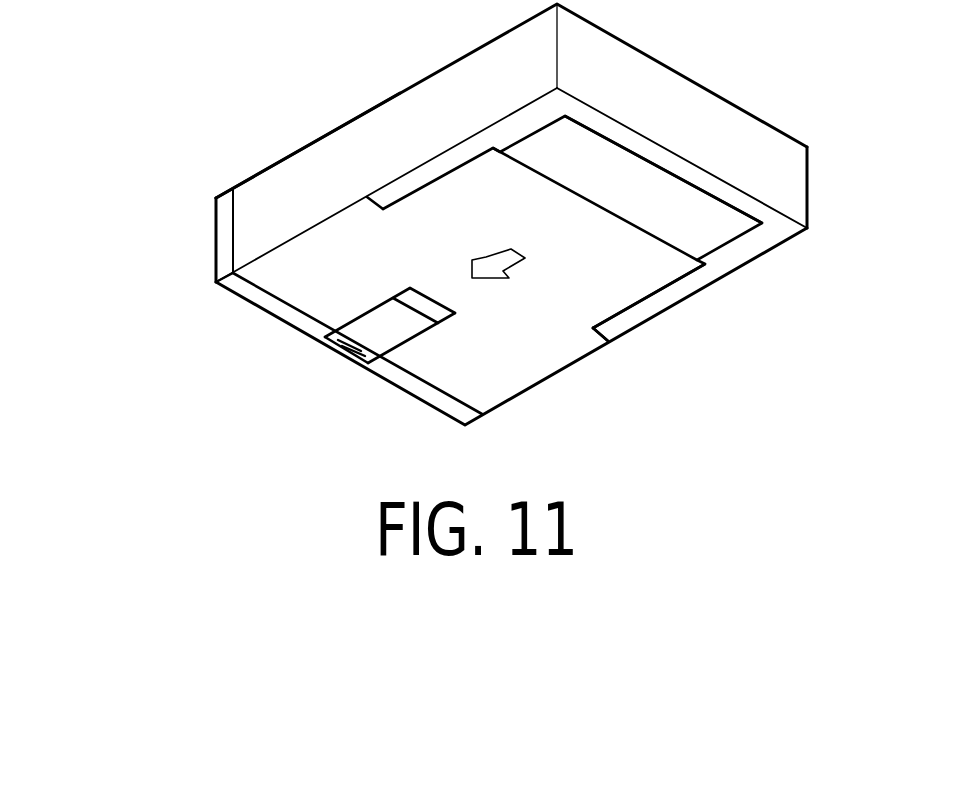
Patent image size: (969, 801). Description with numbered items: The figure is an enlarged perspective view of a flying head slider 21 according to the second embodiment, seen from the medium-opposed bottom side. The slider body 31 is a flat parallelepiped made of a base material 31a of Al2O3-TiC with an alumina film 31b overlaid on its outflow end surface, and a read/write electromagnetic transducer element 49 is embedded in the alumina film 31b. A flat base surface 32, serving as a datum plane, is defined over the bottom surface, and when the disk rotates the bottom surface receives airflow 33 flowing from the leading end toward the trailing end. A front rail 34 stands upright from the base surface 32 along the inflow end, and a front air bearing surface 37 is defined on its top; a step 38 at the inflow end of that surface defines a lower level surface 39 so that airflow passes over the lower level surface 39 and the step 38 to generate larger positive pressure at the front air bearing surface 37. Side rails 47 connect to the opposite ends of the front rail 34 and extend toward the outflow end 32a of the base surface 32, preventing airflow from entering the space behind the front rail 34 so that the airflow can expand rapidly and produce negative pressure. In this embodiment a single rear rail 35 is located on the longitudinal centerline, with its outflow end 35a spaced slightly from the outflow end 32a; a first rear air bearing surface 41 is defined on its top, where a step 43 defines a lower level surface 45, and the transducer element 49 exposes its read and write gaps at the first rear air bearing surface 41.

The flying head slider 21 is at (367, 106).
The slider body 31 is at (108, 127).
The base material 31a is at (260, 170).
The alumina film 31b is at (222, 196).
The base surface 32 is at (623, 279).
The outflow end of the base surface 32a is at (270, 306).
The airflow 33 is at (500, 252).
The front rail 34 is at (520, 165).
The rear rail 35 is at (387, 320).
The outflow end of the rear rail 35a is at (362, 367).
The front air bearing surface 37 is at (634, 206).
The step 38 is at (675, 170).
The lower level surface 39 is at (750, 252).
The first rear air bearing surface 41 is at (408, 344).
The step 43 is at (437, 321).
The lower level surface 45 is at (423, 296).
The side rail 47 is at (385, 187).
The read/write electromagnetic transducer element 49 is at (347, 358).